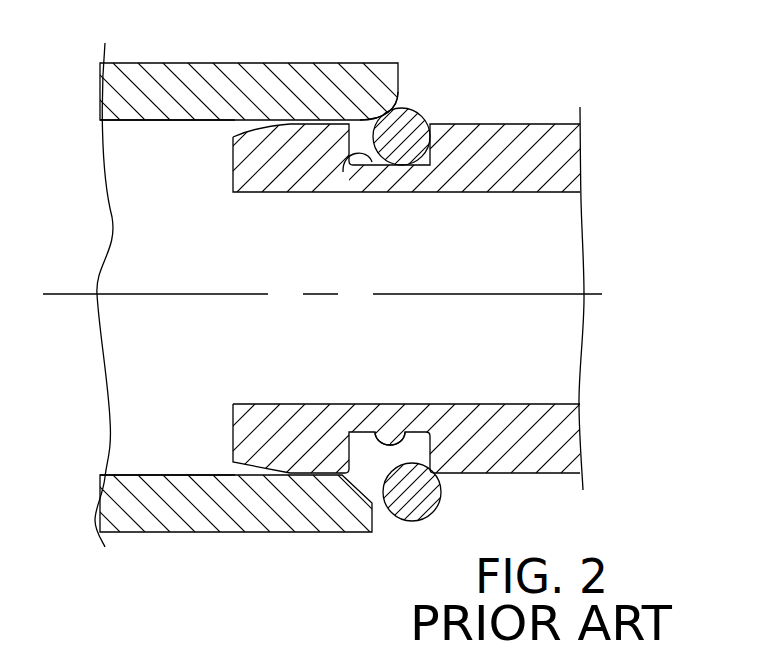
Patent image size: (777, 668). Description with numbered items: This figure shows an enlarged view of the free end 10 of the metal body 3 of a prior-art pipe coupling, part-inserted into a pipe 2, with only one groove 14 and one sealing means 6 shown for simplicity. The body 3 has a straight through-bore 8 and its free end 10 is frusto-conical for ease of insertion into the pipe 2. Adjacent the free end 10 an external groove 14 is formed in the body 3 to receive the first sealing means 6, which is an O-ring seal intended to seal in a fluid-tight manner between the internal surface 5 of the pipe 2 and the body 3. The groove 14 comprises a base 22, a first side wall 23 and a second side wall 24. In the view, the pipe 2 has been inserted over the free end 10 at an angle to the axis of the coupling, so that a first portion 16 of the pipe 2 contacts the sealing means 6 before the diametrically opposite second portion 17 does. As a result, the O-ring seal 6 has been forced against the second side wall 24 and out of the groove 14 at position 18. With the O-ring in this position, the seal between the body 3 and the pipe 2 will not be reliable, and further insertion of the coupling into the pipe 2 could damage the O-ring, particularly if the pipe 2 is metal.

The pipe 2 is at (186, 88).
The metal body 3 is at (518, 145).
The internal surface of the pipe 5 is at (146, 120).
The first sealing means 6 is at (411, 152).
The through-bore 8 is at (167, 475).
The free end 10 is at (242, 180).
The external groove 14 is at (343, 172).
The first portion of the pipe 16 is at (377, 80).
The second portion of the pipe 17 is at (328, 507).
The position of displaced O-ring 18 is at (450, 490).
The base of the groove 22 is at (378, 432).
The first side wall 23 is at (348, 455).
The second side wall 24 is at (430, 460).